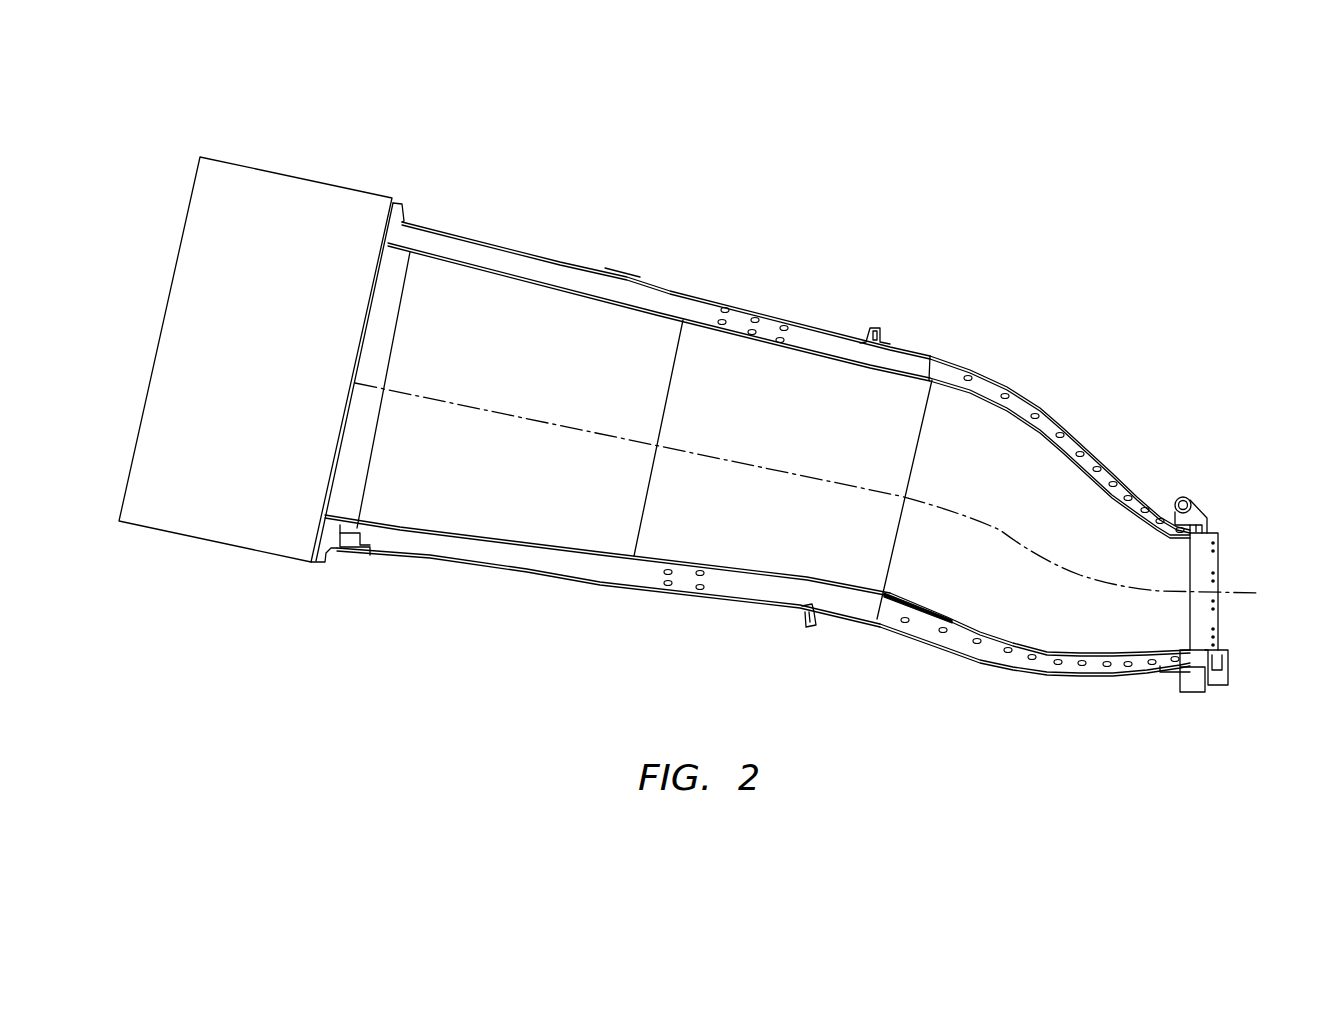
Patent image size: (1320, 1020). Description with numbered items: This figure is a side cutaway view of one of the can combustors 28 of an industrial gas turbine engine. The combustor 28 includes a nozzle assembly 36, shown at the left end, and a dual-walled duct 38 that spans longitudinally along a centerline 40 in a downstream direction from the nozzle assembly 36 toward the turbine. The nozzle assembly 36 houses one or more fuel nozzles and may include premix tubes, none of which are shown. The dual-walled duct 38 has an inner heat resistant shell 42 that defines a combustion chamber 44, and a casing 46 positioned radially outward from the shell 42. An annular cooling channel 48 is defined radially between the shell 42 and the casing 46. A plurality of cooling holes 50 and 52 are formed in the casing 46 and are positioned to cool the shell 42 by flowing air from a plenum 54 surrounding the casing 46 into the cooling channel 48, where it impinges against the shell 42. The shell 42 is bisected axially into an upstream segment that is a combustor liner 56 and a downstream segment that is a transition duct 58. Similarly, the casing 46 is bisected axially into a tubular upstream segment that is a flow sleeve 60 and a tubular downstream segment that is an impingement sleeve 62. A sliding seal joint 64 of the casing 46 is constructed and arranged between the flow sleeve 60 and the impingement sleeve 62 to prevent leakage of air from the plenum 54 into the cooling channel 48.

The can combustor 28 is at (798, 142).
The nozzle assembly 36 is at (305, 165).
The dual-walled duct 38 is at (623, 268).
The centerline 40 is at (1240, 593).
The inner heat resistant shell 42 is at (608, 308).
The combustion chamber 44 is at (512, 516).
The casing 46 is at (968, 348).
The annular cooling channel 48 is at (578, 570).
The cooling holes 50 is at (755, 316).
The cooling holes 52 is at (1082, 452).
The plenum 54 is at (612, 162).
The combustor liner 56 is at (520, 285).
The transition duct 58 is at (1030, 430).
The flow sleeve 60 is at (515, 248).
The impingement sleeve 62 is at (1025, 388).
The sliding seal joint 64 is at (882, 316).